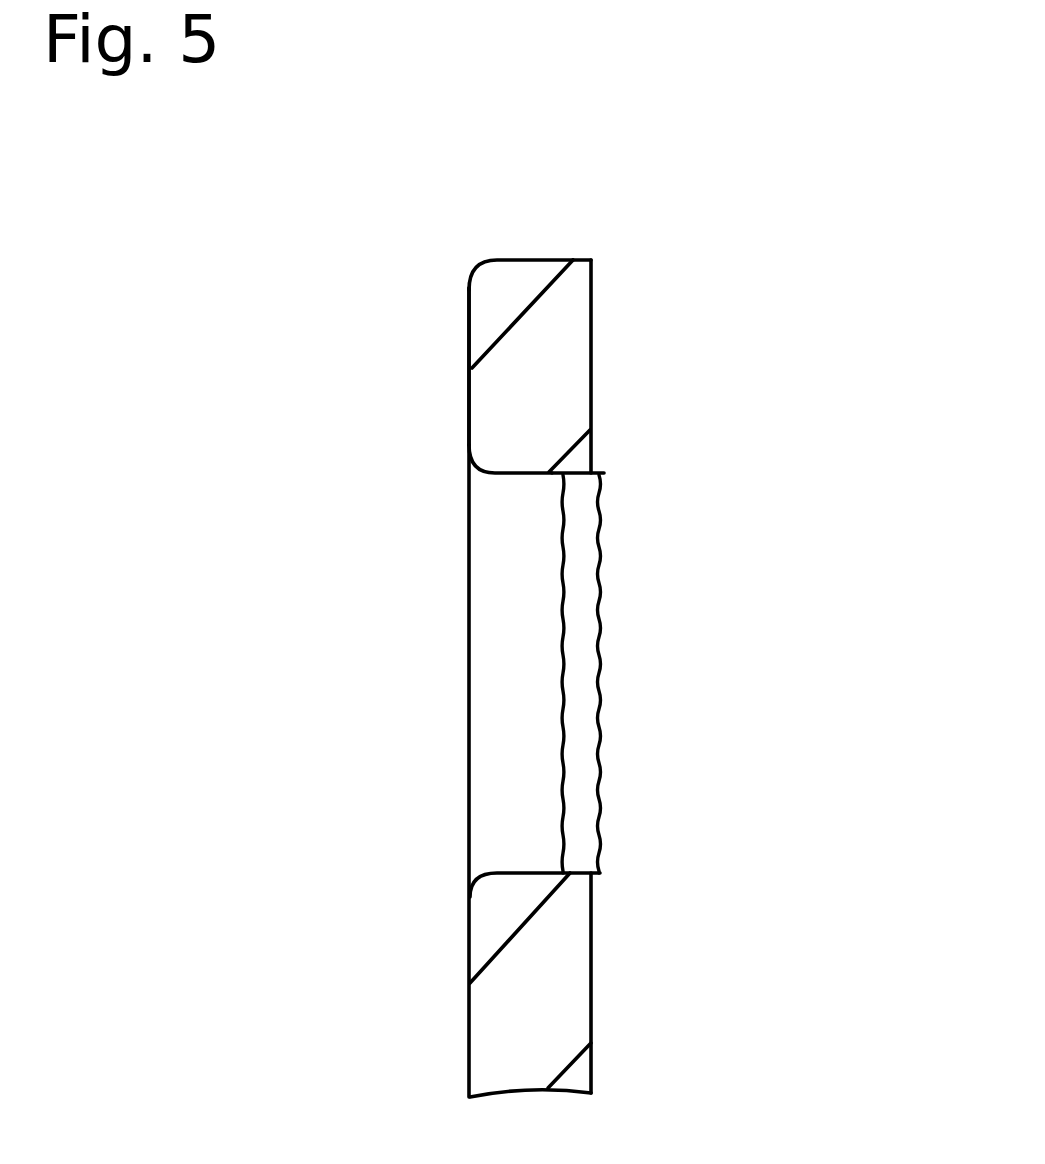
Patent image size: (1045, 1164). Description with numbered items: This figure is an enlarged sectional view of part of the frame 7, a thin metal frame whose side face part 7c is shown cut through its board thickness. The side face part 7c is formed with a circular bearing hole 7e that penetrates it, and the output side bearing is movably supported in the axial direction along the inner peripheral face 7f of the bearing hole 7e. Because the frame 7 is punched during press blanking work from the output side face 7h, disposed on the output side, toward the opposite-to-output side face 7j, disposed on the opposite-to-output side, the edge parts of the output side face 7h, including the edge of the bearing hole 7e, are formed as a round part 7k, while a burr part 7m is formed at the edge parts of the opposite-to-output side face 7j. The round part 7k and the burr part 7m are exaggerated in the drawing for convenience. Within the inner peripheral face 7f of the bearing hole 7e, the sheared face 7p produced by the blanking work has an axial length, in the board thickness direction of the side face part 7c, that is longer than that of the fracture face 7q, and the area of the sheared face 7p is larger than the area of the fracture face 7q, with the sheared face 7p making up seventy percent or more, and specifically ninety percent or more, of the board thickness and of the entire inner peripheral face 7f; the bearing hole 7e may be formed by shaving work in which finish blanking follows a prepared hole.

The frame 7 is at (833, 190).
The side face part 7c is at (536, 643).
The bearing hole 7e is at (535, 872).
The inner peripheral face 7f is at (532, 573).
The output side face 7h is at (468, 371).
The opposite-to-output side face 7j is at (593, 372).
The round part 7k is at (484, 269).
The burr part 7m is at (593, 265).
The sheared face 7p is at (488, 669).
The fracture face 7q is at (587, 662).